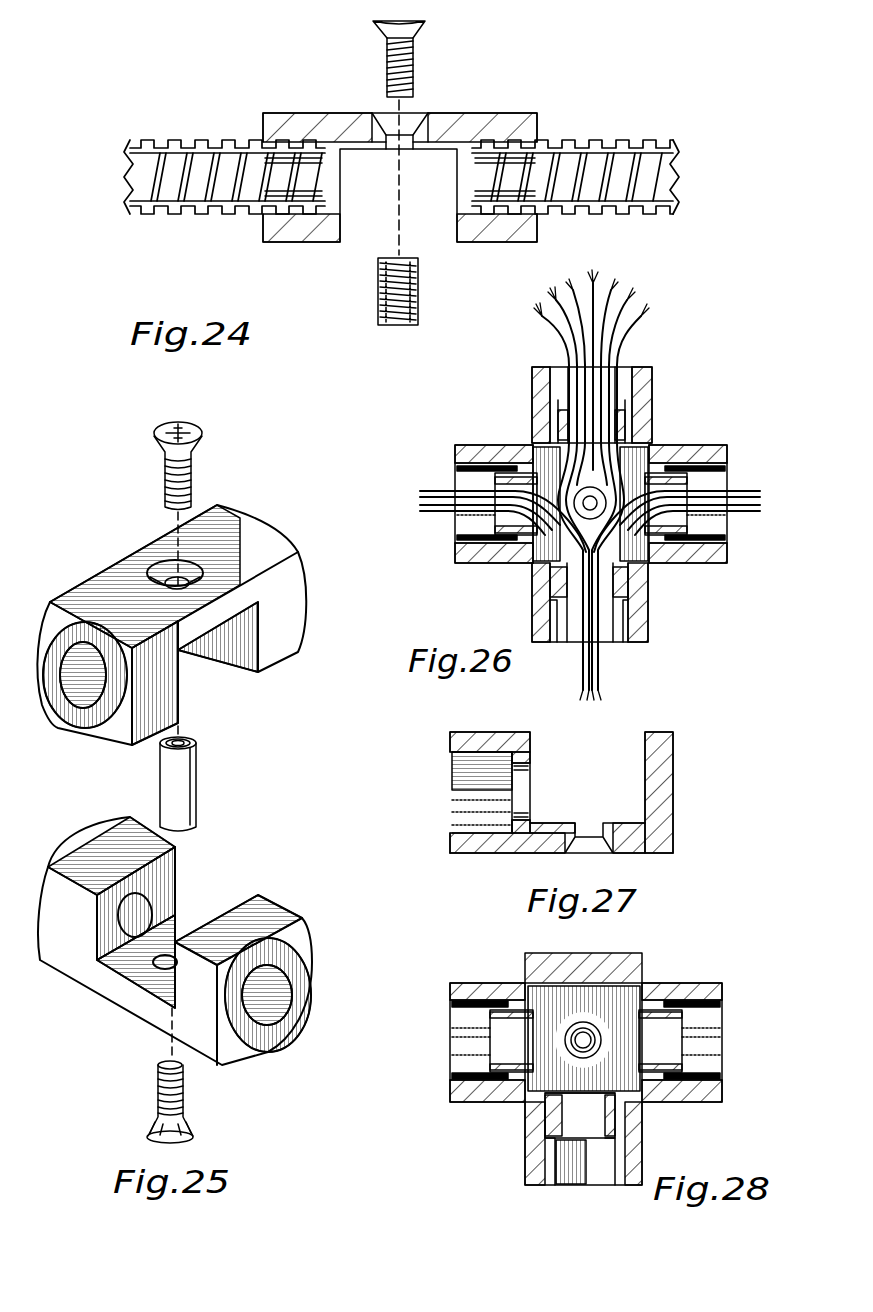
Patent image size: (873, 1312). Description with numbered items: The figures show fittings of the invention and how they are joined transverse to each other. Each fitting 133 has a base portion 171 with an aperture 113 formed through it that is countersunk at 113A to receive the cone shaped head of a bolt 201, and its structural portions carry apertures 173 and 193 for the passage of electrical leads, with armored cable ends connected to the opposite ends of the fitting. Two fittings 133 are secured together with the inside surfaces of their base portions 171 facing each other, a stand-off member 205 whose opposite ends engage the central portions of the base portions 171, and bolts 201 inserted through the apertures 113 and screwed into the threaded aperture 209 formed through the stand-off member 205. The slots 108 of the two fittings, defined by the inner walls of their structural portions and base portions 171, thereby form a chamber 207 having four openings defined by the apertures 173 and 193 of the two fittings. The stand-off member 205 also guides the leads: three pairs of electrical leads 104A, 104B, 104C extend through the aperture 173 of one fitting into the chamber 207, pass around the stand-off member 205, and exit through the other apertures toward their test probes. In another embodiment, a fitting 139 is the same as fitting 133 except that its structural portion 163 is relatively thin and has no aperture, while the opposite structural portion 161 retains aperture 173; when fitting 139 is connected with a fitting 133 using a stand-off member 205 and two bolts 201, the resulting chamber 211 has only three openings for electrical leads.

In FIG. 26, the electrical leads 104A is at (605, 305).
In FIG. 26, the electrical leads 104B is at (627, 330).
In FIG. 26, the electrical leads 104C is at (593, 283).
In FIG. 24, the slot 108 is at (387, 207).
In FIG. 24, the aperture 113 is at (380, 140).
In FIG. 24, the countersink 113A is at (387, 112).
In FIG. 24, the fitting 133 is at (492, 107).
In FIG. 25, the fitting 133 is at (275, 652).
In FIG. 26, the fitting 133 is at (643, 397).
In FIG. 28, the fitting 133 is at (700, 982).
In FIG. 27, the fitting 139 is at (673, 837).
In FIG. 28, the fitting 139 is at (523, 1140).
In FIG. 24, the structural portion 161 is at (270, 114).
In FIG. 27, the structural portion 161 is at (480, 732).
In FIG. 28, the structural portion 161 is at (467, 980).
In FIG. 24, the structural portion 163 is at (513, 117).
In FIG. 27, the structural portion 163 is at (677, 760).
In FIG. 28, the structural portion 163 is at (593, 953).
In FIG. 24, the base portion 171 is at (445, 113).
In FIG. 24, the aperture 173 is at (310, 230).
In FIG. 26, the aperture 173 is at (622, 383).
In FIG. 27, the aperture 173 is at (480, 755).
In FIG. 28, the aperture 173 is at (455, 1018).
In FIG. 24, the aperture 193 is at (510, 240).
In FIG. 26, the aperture 193 is at (456, 474).
In FIG. 28, the aperture 193 is at (713, 1023).
In FIG. 24, the bolt 201 is at (413, 80).
In FIG. 25, the bolt 201 is at (193, 470).
In FIG. 24, the stand-off member 205 is at (400, 327).
In FIG. 25, the stand-off member 205 is at (198, 790).
In FIG. 28, the stand-off member 205 is at (603, 1037).
In FIG. 26, the chamber 207 is at (647, 440).
In FIG. 24, the threaded aperture 209 is at (380, 320).
In FIG. 25, the threaded aperture 209 is at (188, 742).
In FIG. 28, the chamber 211 is at (557, 982).